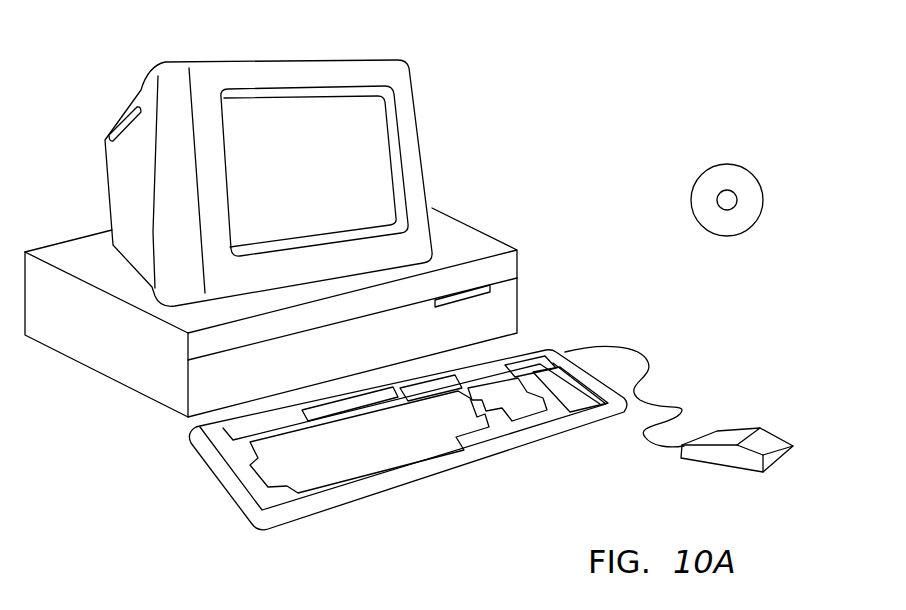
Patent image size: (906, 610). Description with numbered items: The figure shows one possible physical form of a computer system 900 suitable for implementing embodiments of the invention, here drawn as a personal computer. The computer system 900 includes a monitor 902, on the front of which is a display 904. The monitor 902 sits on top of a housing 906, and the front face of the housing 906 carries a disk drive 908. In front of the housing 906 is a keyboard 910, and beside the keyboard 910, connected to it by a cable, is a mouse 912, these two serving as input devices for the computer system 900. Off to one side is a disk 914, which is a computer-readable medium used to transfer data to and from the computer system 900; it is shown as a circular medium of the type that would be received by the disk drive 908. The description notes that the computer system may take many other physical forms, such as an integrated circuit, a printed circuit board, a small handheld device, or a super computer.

The computer system 900 is at (640, 35).
The monitor 902 is at (428, 183).
The display 904 is at (386, 127).
The housing 906 is at (150, 397).
The disk drive 908 is at (490, 284).
The keyboard 910 is at (413, 480).
The mouse 912 is at (780, 435).
The disk 914 is at (745, 165).